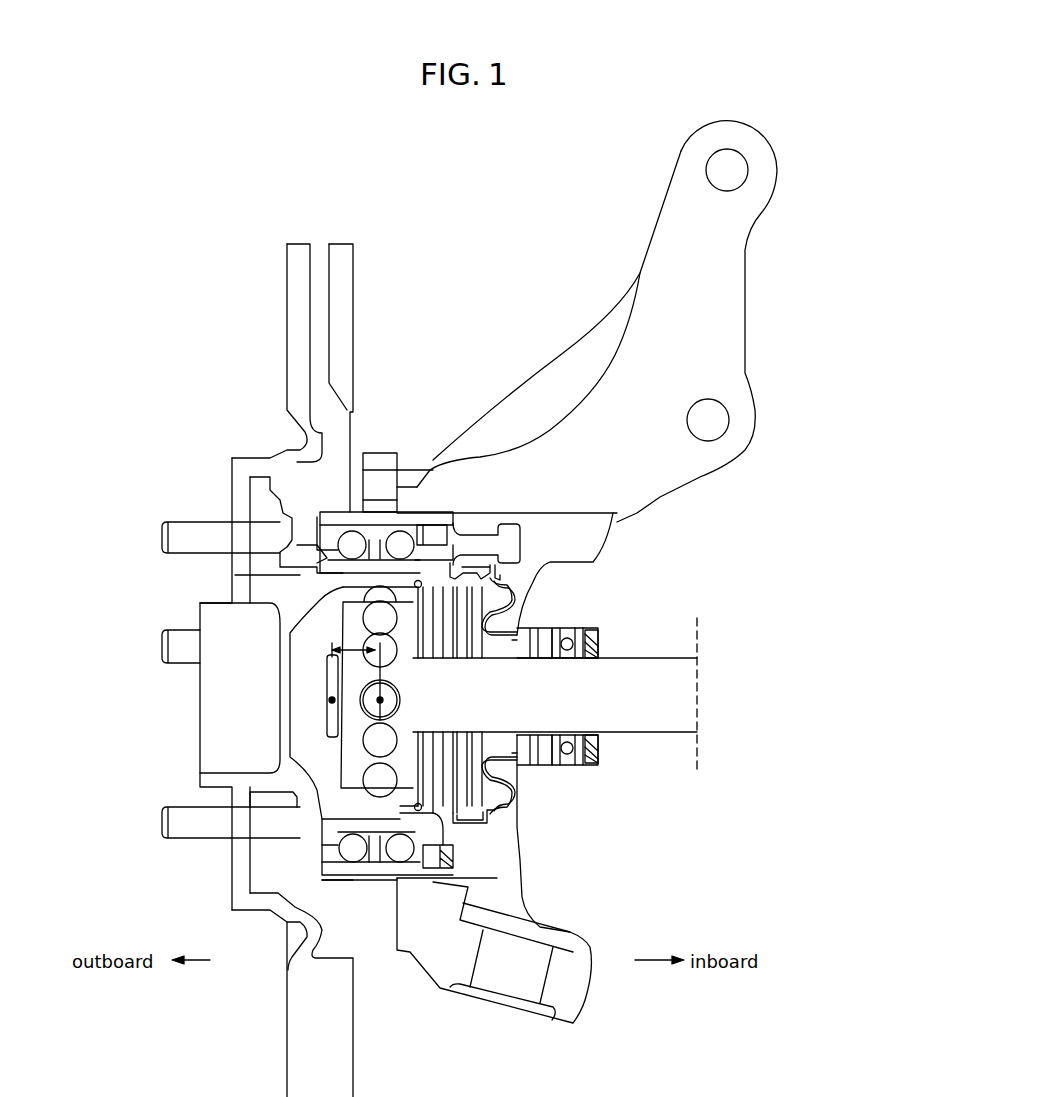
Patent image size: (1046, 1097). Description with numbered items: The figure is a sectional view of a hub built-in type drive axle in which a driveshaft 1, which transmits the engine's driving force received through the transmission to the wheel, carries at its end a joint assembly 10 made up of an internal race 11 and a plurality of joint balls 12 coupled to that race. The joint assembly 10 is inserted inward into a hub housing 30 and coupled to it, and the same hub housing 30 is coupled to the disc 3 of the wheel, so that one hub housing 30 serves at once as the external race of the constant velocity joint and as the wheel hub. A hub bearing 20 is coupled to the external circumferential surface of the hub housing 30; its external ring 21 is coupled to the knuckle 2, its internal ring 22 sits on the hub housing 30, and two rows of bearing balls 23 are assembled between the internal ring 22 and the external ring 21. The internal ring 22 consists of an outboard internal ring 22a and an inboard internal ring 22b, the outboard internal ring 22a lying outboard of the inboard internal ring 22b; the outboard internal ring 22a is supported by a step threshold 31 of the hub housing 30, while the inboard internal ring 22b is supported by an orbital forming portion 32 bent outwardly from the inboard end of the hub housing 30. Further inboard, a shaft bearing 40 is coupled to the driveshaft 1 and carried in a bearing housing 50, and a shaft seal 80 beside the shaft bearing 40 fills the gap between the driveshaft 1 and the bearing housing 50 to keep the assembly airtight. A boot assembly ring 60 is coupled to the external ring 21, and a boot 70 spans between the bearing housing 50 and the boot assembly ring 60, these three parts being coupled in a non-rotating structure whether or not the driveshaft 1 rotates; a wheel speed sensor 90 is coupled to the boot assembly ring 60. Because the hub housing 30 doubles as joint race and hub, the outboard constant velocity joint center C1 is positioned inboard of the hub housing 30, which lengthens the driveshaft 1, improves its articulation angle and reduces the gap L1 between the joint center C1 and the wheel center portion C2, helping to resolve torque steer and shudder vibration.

The driveshaft 1 is at (677, 698).
The knuckle 2 is at (723, 310).
The disc 3 is at (295, 317).
The joint assembly 10 is at (216, 727).
The internal race 11 is at (350, 763).
The joint balls 12 is at (387, 780).
The hub bearing 20 is at (370, 892).
The external ring 21 is at (386, 507).
The internal ring 22 is at (466, 674).
The outboard internal ring 22a is at (320, 557).
The inboard internal ring 22b is at (437, 513).
The bearing balls 23 is at (400, 540).
The hub housing 30 is at (275, 605).
The step threshold 31 is at (300, 568).
The orbital forming portion 32 is at (463, 568).
The shaft bearing 40 is at (567, 755).
The bearing housing 50 is at (577, 632).
The boot assembly ring 60 is at (470, 812).
The boot 70 is at (495, 812).
The shaft seal 80 is at (582, 645).
The wheel speed sensor 90 is at (505, 542).
The gap L1 is at (357, 650).
The outboard constant velocity joint center C1 is at (378, 713).
The wheel center portion C2 is at (332, 700).